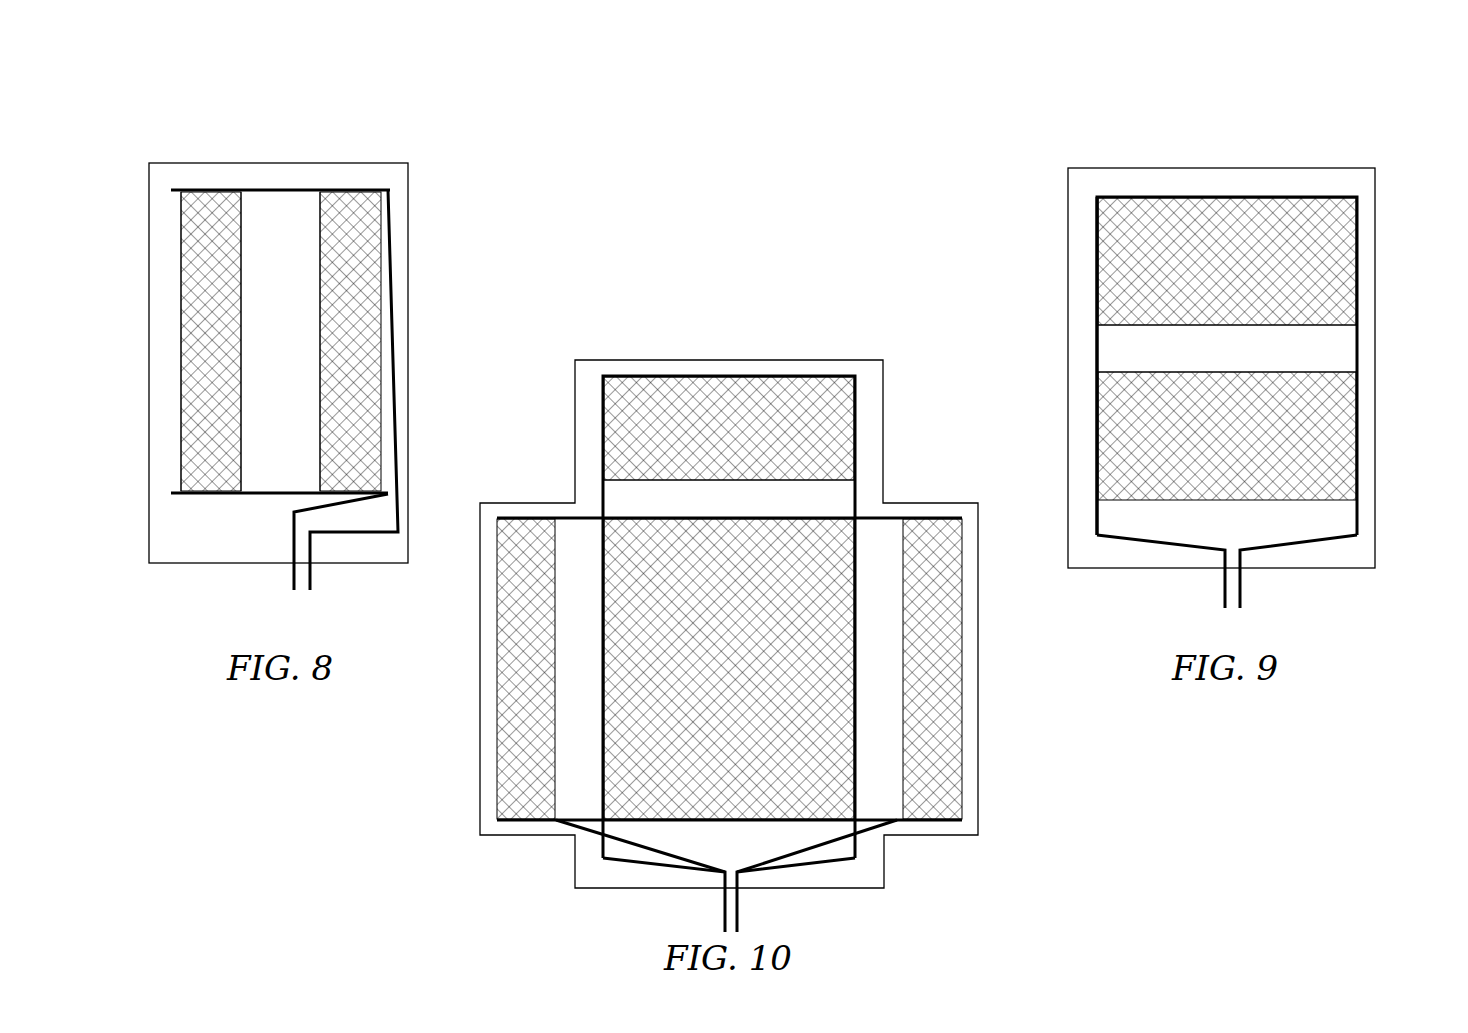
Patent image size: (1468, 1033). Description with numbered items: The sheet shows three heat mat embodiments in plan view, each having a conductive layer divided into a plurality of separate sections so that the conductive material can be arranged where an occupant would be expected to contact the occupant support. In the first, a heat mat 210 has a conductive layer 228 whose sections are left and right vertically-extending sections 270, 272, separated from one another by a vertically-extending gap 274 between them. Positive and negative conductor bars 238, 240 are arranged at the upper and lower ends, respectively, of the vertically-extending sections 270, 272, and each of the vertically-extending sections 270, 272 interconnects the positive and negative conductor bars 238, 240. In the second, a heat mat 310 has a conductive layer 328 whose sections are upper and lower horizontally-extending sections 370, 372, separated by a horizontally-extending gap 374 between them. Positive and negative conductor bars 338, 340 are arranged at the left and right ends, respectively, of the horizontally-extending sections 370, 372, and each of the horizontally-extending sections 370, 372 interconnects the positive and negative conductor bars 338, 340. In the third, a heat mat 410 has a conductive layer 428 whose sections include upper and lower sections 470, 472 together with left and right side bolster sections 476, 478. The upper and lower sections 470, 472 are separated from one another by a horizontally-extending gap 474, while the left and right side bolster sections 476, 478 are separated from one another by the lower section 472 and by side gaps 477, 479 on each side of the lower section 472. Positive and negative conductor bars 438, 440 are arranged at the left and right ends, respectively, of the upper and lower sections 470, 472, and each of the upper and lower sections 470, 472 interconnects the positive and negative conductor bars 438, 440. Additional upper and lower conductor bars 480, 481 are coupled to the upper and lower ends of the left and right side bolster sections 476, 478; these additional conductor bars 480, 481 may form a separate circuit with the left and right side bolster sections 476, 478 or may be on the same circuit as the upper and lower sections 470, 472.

In FIG. 8, the heat mat 210 is at (416, 128).
In FIG. 8, the positive conductor bar 238 is at (190, 188).
In FIG. 8, the conductive layer 228 is at (350, 188).
In FIG. 8, the left vertically-extending section 270 is at (179, 278).
In FIG. 8, the vertically-extending gap 274 is at (266, 472).
In FIG. 8, the right vertically-extending section 272 is at (386, 252).
In FIG. 8, the negative conductor bar 240 is at (188, 496).
In FIG. 9, the heat mat 310 is at (1366, 132).
In FIG. 9, the negative conductor bar 340 is at (1360, 275).
In FIG. 9, the upper horizontally-extending section 370 is at (1360, 228).
In FIG. 9, the horizontally-extending gap 374 is at (1338, 352).
In FIG. 9, the lower horizontally-extending section 372 is at (1360, 462).
In FIG. 9, the conductive layer 328 is at (1095, 255).
In FIG. 9, the positive conductor bar 338 is at (1096, 460).
In FIG. 10, the heat mat 410 is at (612, 328).
In FIG. 10, the conductive layer 428 is at (900, 546).
In FIG. 10, the upper section 470 is at (787, 368).
In FIG. 10, the horizontally-extending gap 474 is at (858, 492).
In FIG. 10, the upper conductor bar 480 is at (516, 520).
In FIG. 10, the left side bolster section 476 is at (494, 752).
In FIG. 10, the right side bolster section 478 is at (966, 752).
In FIG. 10, the positive conductor bar 438 is at (602, 790).
In FIG. 10, the negative conductor bar 440 is at (856, 790).
In FIG. 10, the lower section 472 is at (808, 822).
In FIG. 10, the lower conductor bar 481 is at (515, 822).
In FIG. 10, the side gap 477 is at (576, 806).
In FIG. 10, the side gap 479 is at (884, 812).